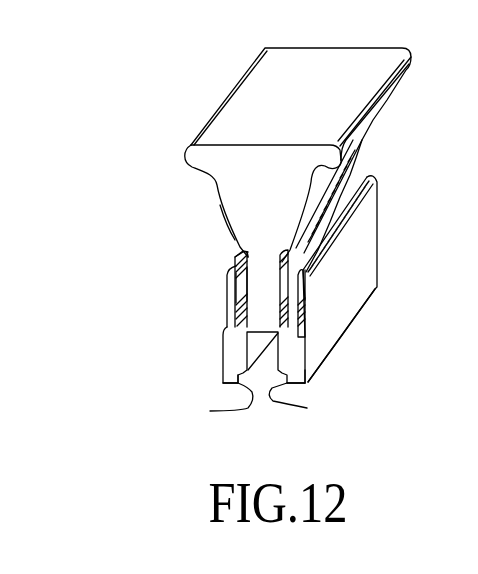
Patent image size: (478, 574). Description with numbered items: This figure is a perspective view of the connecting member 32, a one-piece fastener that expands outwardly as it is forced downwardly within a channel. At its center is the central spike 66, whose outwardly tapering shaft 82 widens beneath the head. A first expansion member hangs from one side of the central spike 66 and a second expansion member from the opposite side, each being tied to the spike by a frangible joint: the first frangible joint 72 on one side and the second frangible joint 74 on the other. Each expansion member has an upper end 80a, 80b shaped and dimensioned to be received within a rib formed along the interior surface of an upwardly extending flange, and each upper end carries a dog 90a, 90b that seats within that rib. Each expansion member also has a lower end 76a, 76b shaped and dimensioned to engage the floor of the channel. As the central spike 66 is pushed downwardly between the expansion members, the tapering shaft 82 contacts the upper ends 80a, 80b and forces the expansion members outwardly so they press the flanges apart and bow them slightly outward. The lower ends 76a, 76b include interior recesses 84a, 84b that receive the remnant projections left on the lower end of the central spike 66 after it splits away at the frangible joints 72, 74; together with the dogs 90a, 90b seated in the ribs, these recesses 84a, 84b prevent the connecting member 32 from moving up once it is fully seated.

The connecting member 32 is at (240, 118).
The central spike 66 is at (250, 183).
The outwardly tapering shaft 82 is at (228, 225).
The upper end 80a is at (227, 290).
The upper end 80b is at (297, 268).
The dog 90a is at (228, 270).
The dog 90b is at (292, 267).
The first frangible joint 72 is at (226, 349).
The second frangible joint 74 is at (302, 338).
The lower end 76a is at (232, 365).
The lower end 76b is at (290, 355).
The interior recess 84a is at (210, 411).
The interior recess 84b is at (307, 408).